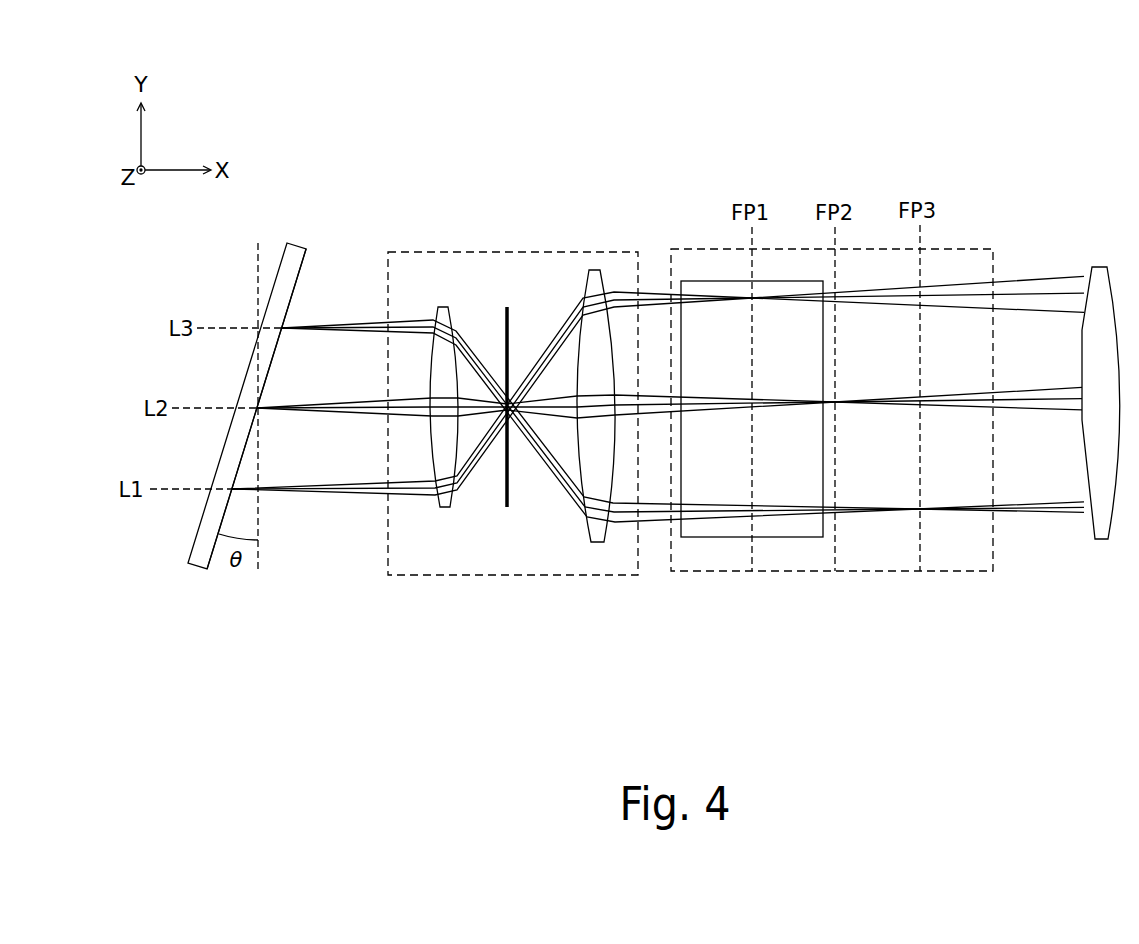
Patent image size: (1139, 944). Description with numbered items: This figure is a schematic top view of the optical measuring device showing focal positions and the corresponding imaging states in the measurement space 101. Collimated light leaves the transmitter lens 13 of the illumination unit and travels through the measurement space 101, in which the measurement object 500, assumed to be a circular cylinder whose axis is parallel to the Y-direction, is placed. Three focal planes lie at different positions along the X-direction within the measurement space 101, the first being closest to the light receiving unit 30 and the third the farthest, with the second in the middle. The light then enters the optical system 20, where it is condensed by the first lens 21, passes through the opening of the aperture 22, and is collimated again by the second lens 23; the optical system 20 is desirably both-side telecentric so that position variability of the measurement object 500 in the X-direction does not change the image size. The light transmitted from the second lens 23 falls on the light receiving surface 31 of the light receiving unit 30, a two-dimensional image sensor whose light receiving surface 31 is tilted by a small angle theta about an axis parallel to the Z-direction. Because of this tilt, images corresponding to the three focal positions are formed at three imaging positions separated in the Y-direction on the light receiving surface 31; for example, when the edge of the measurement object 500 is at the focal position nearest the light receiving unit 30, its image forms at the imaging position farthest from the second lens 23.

The transmitter lens 13 is at (1098, 266).
The optical system 20 is at (410, 250).
The first lens 21 is at (595, 270).
The aperture 22 is at (508, 307).
The second lens 23 is at (447, 307).
The light receiving unit 30 is at (192, 565).
The light receiving surface 31 is at (306, 254).
The measurement space 101 is at (980, 247).
The measurement object 500 is at (706, 280).